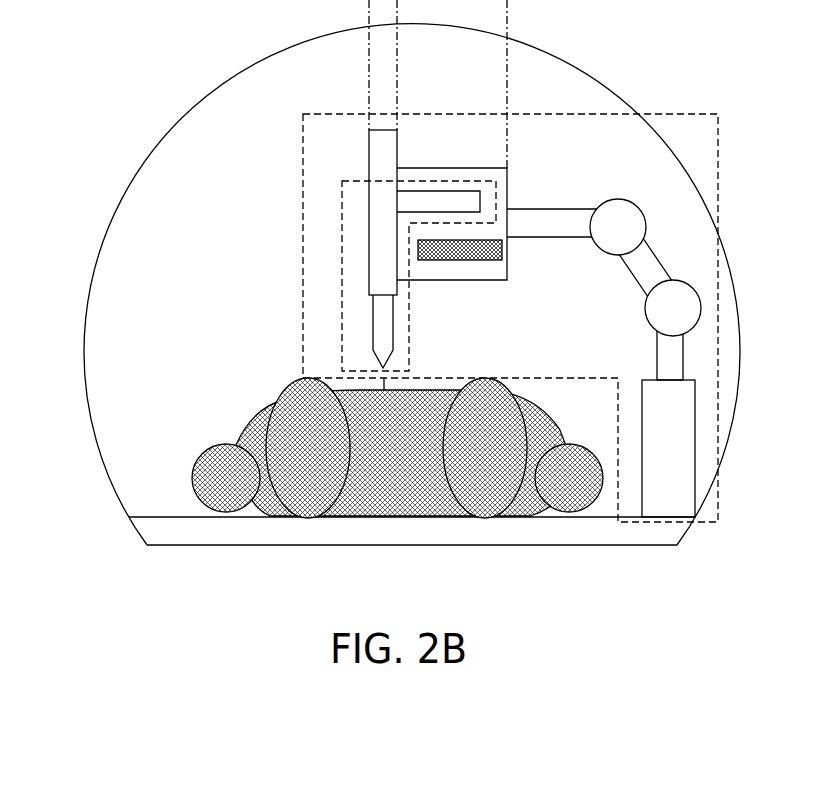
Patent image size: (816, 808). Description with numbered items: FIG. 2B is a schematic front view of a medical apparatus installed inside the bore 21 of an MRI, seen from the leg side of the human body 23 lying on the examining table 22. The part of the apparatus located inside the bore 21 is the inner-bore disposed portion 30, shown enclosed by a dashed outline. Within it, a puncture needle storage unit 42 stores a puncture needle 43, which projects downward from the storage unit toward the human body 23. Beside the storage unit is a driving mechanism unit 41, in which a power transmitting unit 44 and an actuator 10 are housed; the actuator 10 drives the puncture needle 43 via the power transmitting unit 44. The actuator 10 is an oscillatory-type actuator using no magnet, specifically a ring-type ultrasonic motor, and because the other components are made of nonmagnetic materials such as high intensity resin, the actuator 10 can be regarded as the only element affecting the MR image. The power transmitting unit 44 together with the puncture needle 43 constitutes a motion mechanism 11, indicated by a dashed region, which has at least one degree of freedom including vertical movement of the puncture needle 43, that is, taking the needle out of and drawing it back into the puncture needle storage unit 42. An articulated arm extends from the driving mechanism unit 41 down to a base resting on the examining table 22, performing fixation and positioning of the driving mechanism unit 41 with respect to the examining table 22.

The actuator 10 is at (503, 248).
The motion mechanism 11 is at (409, 336).
The bore 21 is at (137, 208).
The examining table 22 is at (643, 535).
The human body 23 is at (547, 517).
The inner-bore disposed portion 30 is at (592, 113).
The driving mechanism unit 41 is at (448, 167).
The puncture needle storage unit 42 is at (369, 152).
The puncture needle 43 is at (373, 320).
The power transmitting unit 44 is at (480, 205).